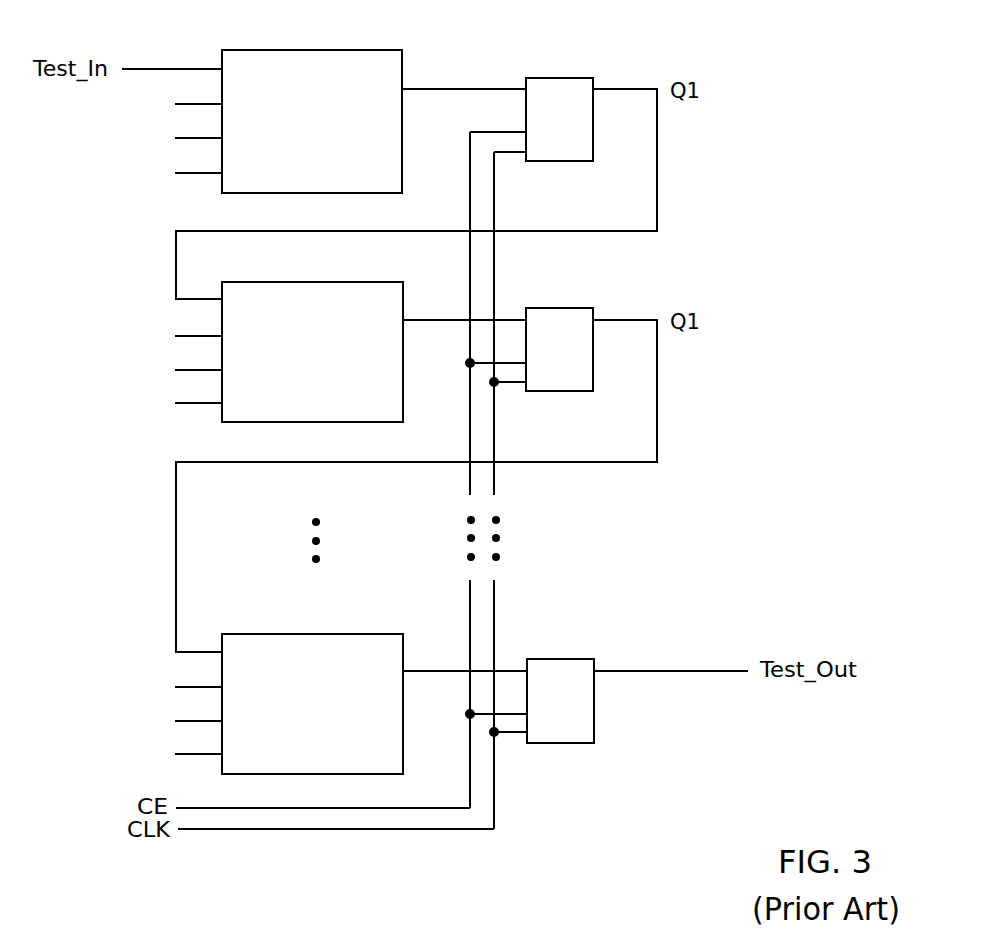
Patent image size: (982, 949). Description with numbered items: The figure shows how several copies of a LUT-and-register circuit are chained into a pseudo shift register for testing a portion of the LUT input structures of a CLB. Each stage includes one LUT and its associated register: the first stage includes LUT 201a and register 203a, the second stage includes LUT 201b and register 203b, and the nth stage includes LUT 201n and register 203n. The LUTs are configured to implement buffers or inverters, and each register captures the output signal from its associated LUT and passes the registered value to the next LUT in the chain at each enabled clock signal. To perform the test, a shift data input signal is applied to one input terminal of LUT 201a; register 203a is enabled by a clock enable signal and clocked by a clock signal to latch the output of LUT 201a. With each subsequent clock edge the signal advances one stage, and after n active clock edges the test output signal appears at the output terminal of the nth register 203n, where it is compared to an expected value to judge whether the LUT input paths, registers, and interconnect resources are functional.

The LUT 201a is at (348, 171).
The LUT 201b is at (348, 402).
The LUT 201n is at (348, 754).
The register 203a is at (539, 78).
The register 203b is at (539, 308).
The register 203n is at (540, 659).